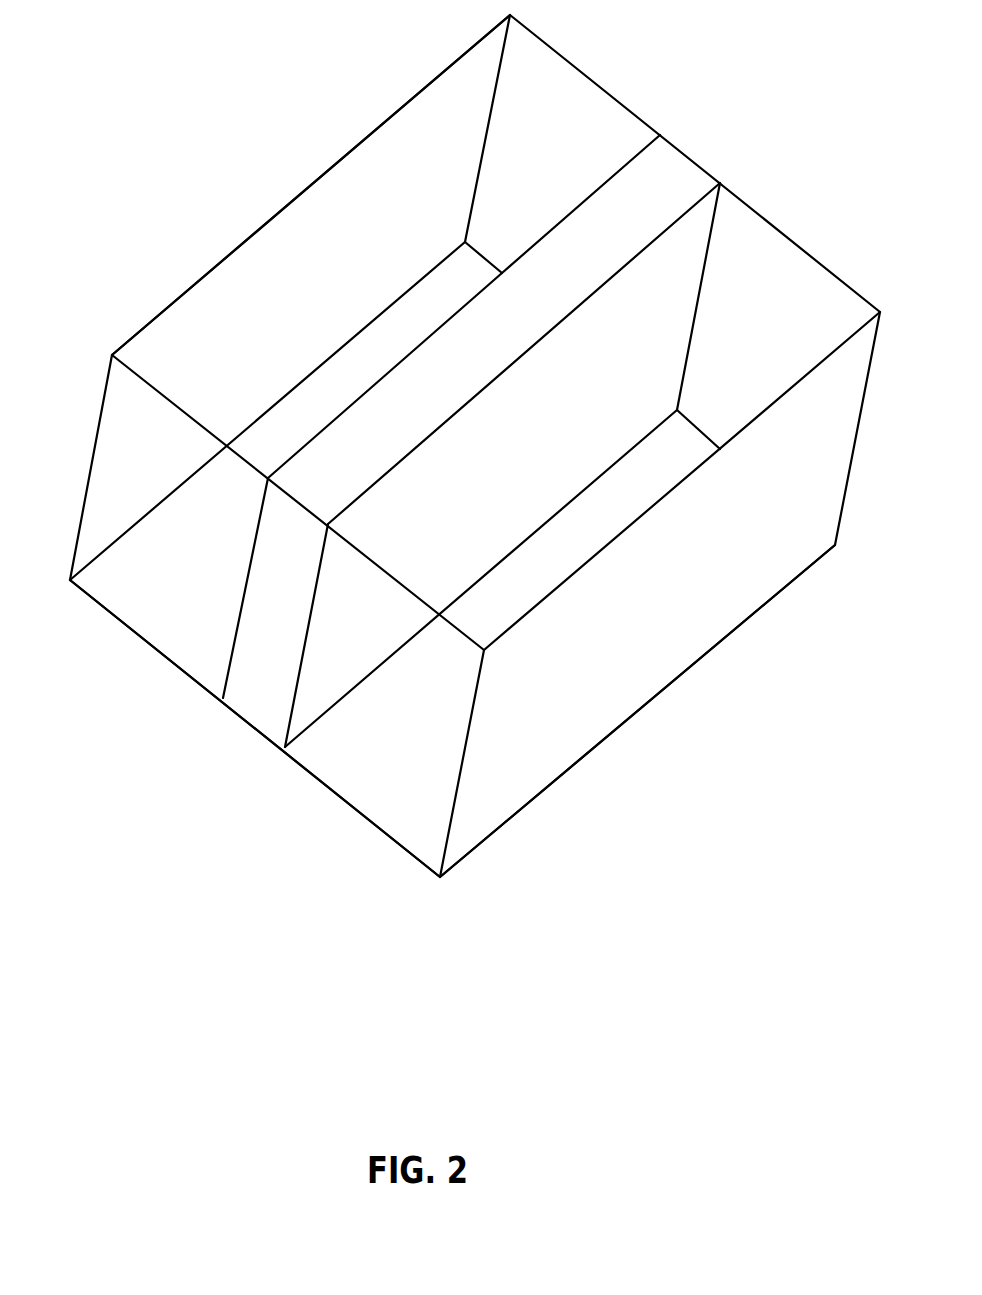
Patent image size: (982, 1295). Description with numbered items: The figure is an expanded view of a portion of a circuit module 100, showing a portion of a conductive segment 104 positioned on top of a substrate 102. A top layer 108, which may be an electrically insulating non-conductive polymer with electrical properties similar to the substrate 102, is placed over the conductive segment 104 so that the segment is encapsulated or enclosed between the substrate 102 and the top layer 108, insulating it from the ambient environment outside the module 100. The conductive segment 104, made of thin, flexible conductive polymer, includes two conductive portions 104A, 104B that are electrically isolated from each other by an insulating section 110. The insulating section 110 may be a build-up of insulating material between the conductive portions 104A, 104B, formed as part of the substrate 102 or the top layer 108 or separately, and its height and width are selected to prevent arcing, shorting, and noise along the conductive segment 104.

The module 100 is at (214, 88).
The substrate 102 is at (545, 790).
The conductive segment 104 is at (363, 815).
The conductive portion 104A is at (235, 573).
The conductive portion 104B is at (442, 743).
The top layer 108 is at (197, 276).
The insulating section 110 is at (530, 467).